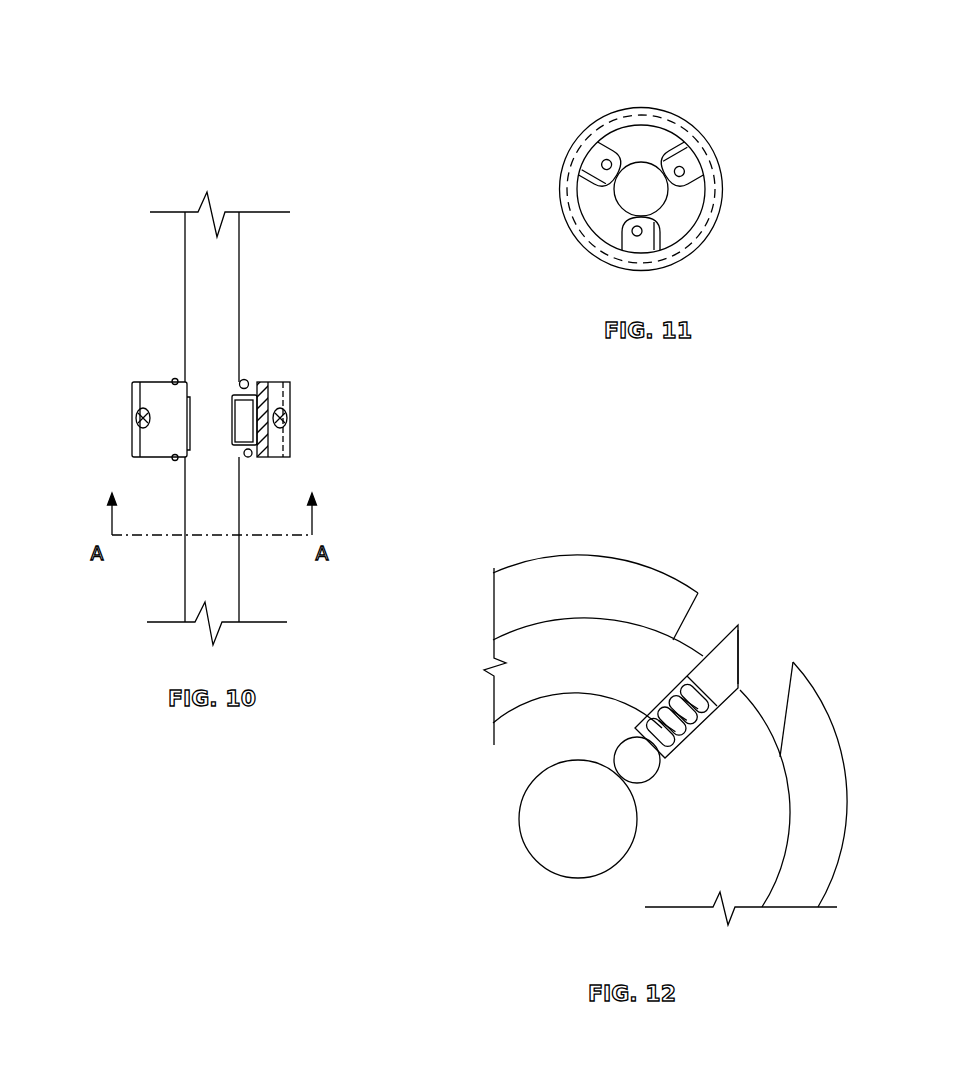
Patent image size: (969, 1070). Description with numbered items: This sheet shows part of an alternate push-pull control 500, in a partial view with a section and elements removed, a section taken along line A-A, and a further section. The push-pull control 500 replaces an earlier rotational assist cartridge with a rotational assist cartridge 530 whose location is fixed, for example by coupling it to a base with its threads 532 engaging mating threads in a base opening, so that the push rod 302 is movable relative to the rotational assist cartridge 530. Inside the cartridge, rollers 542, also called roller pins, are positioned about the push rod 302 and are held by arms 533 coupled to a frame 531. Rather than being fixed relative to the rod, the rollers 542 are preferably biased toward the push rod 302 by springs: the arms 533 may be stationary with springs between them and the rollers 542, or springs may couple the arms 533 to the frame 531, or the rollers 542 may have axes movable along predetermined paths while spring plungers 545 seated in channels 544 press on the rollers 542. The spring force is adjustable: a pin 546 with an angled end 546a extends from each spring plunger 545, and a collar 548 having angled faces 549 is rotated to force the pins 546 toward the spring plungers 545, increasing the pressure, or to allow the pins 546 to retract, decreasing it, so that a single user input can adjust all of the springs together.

In FIG. 10, the push-pull control 500 is at (244, 338).
In FIG. 10, the push rod 302 is at (215, 269).
In FIG. 11, the push rod 302 is at (638, 182).
In FIG. 12, the push rod 302 is at (570, 815).
In FIG. 10, the rotational assist cartridge 530 is at (244, 314).
In FIG. 11, the rotational assist cartridge 530 is at (646, 187).
In FIG. 10, the frame 531 is at (158, 398).
In FIG. 11, the frame 531 is at (585, 176).
In FIG. 10, the threads 532 is at (133, 388).
In FIG. 11, the threads 532 is at (668, 123).
In FIG. 10, the arms 533 is at (247, 384).
In FIG. 11, the arms 533 is at (687, 170).
In FIG. 10, the rollers 542 is at (245, 427).
In FIG. 11, the rollers 542 is at (670, 184).
In FIG. 12, the rollers 542 is at (662, 735).
In FIG. 10, the channels 544 is at (123, 418).
In FIG. 12, the channels 544 is at (670, 690).
In FIG. 12, the spring plungers 545 is at (665, 782).
In FIG. 12, the pin 546 is at (742, 604).
In FIG. 12, the angled end 546a is at (740, 657).
In FIG. 12, the collar 548 is at (632, 543).
In FIG. 12, the angled faces 549 is at (793, 662).